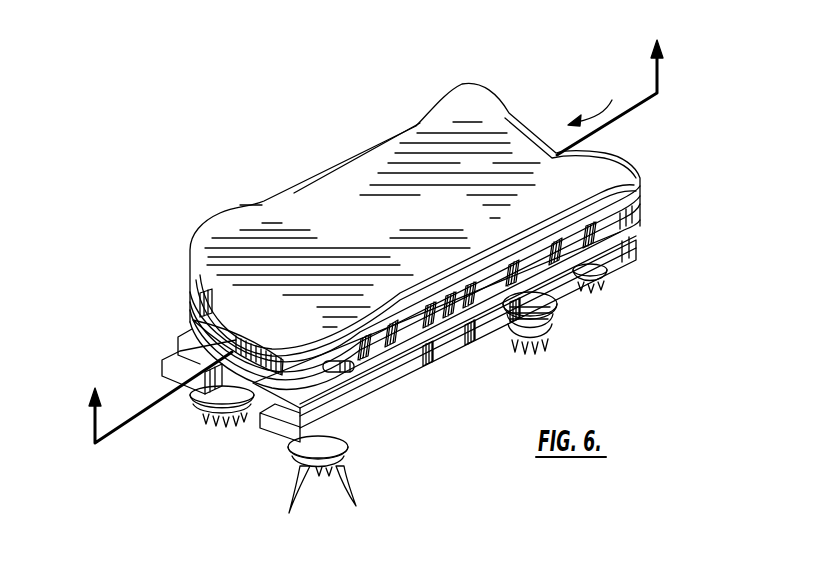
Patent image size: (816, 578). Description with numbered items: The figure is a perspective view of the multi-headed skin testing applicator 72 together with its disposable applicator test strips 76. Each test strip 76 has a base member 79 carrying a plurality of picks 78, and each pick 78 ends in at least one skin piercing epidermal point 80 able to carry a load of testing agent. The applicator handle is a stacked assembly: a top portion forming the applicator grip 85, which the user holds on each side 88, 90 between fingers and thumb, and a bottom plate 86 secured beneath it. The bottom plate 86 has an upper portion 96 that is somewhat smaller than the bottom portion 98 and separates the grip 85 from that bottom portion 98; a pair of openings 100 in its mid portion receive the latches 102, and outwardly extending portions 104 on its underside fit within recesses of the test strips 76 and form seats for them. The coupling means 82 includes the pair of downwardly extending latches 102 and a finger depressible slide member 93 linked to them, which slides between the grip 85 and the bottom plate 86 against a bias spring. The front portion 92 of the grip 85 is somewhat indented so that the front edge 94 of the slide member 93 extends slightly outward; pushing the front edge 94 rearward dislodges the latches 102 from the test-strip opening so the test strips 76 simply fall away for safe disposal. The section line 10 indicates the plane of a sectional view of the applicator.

The section line 10 is at (379, 261).
The applicator 72 is at (592, 96).
The applicator test strip 76 is at (242, 430).
The picks 78 is at (524, 344).
The base member 79 is at (512, 318).
The skin piercing epidermal point 80 is at (330, 490).
The coupling means 82 is at (450, 328).
The applicator grip 85 is at (262, 240).
The bottom plate 86 is at (544, 332).
The side of the grip 88 is at (548, 292).
The side of the grip 90 is at (357, 156).
The front portion of the grip 92 is at (196, 305).
The slide member 93 is at (193, 321).
The front edge of the slide member 94 is at (166, 377).
The upper portion of the bottom plate 96 is at (553, 268).
The bottom portion of the bottom plate 98 is at (333, 403).
The openings in the bottom plate 100 is at (470, 320).
The latches 102 is at (448, 326).
The outwardly extending portions 104 is at (170, 381).